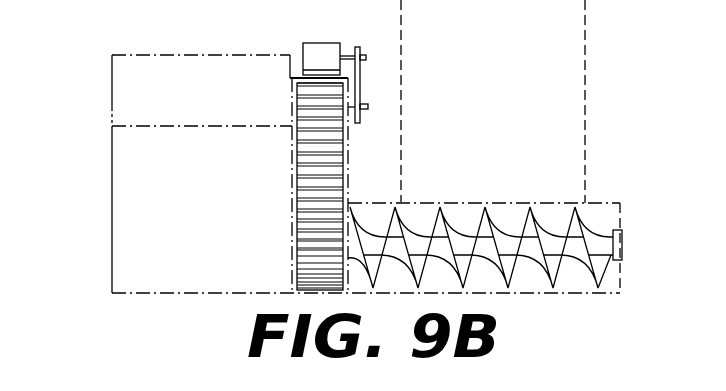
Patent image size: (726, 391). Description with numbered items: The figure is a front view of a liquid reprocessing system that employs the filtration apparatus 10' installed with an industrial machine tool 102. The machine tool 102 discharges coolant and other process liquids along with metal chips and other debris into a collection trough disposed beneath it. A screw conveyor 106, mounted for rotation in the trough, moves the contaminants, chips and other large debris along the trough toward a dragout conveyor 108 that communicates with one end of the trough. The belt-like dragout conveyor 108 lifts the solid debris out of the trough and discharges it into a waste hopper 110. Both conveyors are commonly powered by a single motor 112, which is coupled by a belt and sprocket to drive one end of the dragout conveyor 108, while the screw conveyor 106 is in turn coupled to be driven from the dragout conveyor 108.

The filtration apparatus 10' is at (164, 79).
The industrial machine tool 102 is at (586, 62).
The screw conveyor 106 is at (582, 222).
The dragout conveyor 108 is at (333, 137).
The waste hopper 110 is at (337, 174).
The motor 112 is at (318, 43).